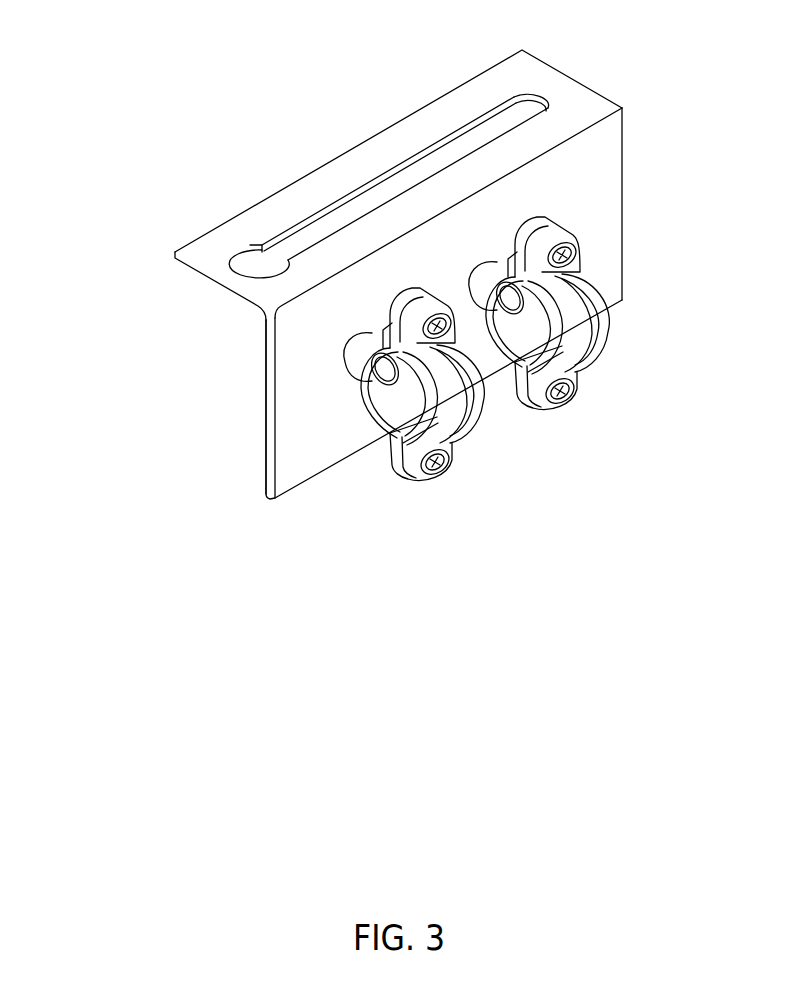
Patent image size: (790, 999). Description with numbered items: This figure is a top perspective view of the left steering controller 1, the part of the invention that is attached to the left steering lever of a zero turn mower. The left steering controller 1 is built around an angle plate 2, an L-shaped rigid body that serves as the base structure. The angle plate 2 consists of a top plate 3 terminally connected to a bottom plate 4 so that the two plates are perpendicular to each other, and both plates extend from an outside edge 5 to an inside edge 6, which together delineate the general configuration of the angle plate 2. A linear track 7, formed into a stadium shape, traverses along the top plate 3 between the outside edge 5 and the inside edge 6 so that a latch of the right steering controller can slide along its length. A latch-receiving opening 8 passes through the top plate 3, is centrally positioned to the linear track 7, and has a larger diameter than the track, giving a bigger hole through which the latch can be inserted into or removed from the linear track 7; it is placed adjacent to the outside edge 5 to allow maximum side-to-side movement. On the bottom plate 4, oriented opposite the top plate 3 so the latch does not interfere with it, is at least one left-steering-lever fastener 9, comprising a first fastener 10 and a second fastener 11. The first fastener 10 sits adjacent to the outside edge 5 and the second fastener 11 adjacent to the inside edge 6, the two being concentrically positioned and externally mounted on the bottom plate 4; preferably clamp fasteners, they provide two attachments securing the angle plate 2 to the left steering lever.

The left steering controller 1 is at (120, 323).
The angle plate 2 is at (421, 263).
The top plate 3 is at (512, 65).
The bottom plate 4 is at (288, 483).
The outside edge 5 is at (266, 443).
The inside edge 6 is at (623, 198).
The linear track 7 is at (422, 172).
The latch-receiving opening 8 is at (247, 260).
The left-steering-lever fastener 9 is at (513, 348).
The first fastener 10 is at (473, 418).
The second fastener 11 is at (595, 343).